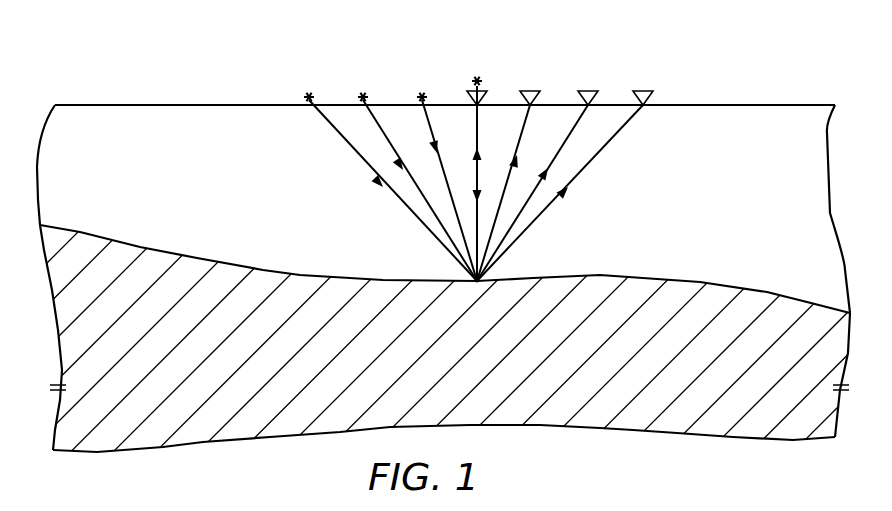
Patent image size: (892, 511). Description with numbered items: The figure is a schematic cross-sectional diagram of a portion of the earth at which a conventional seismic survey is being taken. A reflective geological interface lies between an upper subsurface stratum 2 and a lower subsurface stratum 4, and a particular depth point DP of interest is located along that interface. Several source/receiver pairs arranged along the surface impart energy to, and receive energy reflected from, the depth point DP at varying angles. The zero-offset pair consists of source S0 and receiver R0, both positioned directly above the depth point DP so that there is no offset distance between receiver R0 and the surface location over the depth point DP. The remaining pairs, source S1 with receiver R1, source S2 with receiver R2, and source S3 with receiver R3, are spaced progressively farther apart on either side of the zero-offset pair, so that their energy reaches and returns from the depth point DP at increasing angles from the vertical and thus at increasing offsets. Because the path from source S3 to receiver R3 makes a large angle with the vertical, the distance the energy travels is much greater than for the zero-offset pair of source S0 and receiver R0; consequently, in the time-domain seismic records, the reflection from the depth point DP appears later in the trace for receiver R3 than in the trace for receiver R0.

The subsurface stratum 2 is at (213, 205).
The subsurface stratum 4 is at (484, 378).
The depth point DP is at (479, 283).
The source S0 is at (475, 77).
The source S1 is at (421, 90).
The source S2 is at (362, 91).
The source S3 is at (308, 92).
The receiver R0 is at (484, 89).
The receiver R1 is at (535, 90).
The receiver R2 is at (593, 90).
The receiver R3 is at (648, 90).